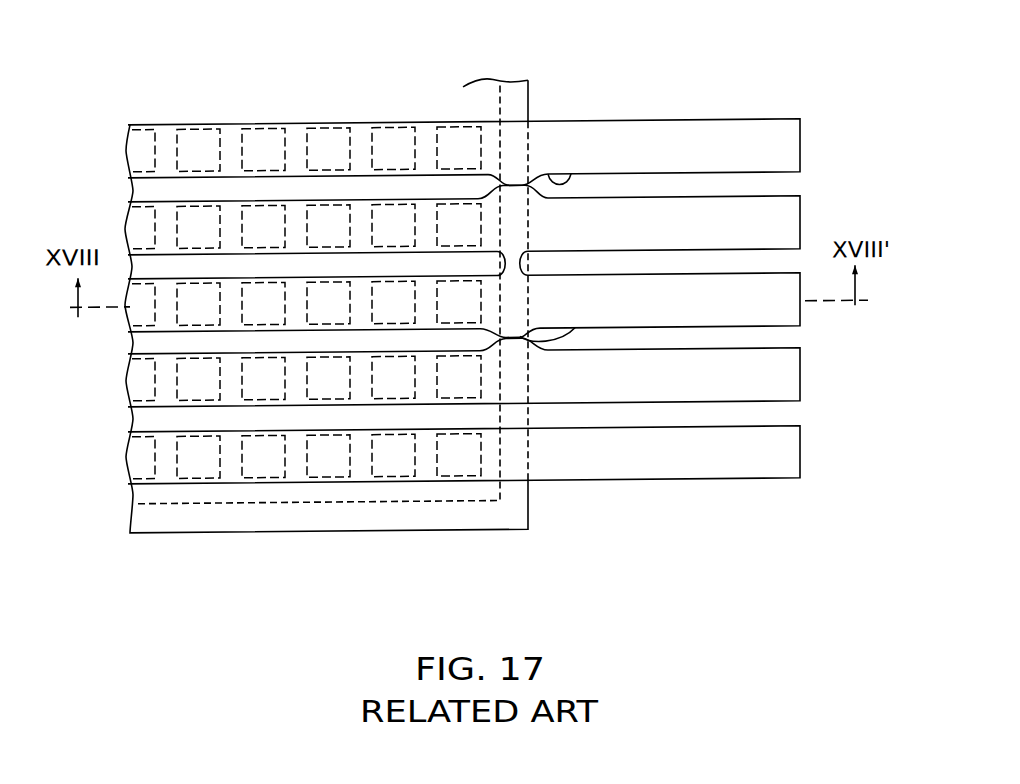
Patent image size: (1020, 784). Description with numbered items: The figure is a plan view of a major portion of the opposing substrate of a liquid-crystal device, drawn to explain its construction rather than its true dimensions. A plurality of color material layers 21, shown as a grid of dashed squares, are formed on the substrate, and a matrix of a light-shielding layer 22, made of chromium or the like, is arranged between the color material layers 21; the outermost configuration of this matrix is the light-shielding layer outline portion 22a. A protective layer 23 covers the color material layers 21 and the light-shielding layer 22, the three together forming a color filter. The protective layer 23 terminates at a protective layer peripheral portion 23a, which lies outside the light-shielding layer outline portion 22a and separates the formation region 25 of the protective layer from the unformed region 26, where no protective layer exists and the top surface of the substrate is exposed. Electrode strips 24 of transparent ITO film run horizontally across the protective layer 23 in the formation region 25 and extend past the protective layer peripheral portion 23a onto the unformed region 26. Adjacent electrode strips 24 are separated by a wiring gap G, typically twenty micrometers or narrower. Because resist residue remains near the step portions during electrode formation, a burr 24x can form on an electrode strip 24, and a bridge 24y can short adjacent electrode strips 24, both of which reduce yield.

The color material layer 21 is at (205, 225).
The light-shielding layer 22 is at (453, 508).
The light-shielding layer outline portion 22a is at (503, 500).
The protective layer 23 is at (513, 99).
The protective layer peripheral portion 23a is at (530, 109).
The electrode strip 24 is at (654, 132).
The burr 24x is at (563, 185).
The bridge 24y is at (492, 260).
The formation region of the protective layer 25 is at (403, 104).
The unformed region of the protective layer 26 is at (780, 75).
The wiring gap G is at (167, 153).